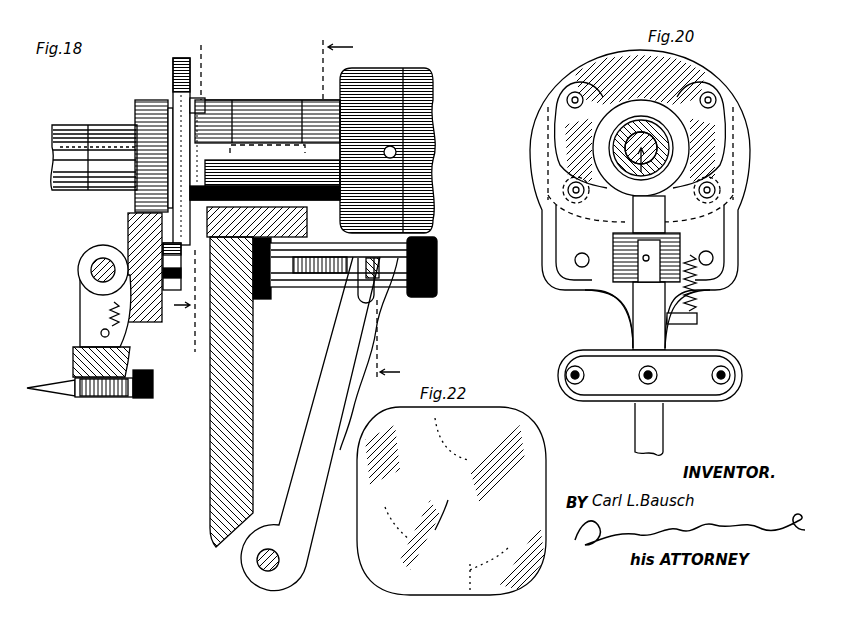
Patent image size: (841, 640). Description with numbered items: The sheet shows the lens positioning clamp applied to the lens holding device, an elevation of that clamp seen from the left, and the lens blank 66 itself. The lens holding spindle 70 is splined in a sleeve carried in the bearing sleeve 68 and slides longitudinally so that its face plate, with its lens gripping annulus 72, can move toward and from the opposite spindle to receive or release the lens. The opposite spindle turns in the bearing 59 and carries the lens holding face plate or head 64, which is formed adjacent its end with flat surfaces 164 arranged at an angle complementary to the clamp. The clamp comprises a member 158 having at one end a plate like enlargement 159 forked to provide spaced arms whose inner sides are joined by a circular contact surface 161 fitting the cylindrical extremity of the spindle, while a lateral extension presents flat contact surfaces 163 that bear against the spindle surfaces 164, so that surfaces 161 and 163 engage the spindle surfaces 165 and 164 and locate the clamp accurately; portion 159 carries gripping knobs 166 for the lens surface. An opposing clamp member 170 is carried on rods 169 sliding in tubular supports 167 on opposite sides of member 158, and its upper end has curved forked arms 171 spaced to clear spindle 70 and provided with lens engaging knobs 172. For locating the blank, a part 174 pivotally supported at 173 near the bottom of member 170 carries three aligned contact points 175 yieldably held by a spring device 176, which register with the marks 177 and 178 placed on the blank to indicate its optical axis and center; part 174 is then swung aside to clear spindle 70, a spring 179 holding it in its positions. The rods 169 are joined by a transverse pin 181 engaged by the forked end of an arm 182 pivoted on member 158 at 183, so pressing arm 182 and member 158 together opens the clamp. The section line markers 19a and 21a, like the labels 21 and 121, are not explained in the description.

In FIG. 18, the shaft axis line / ring 21 is at (113, 126).
In FIG. 20, the shaft axis line / ring 21 is at (667, 122).
In FIG. 18, the bearing 59 is at (387, 136).
In FIG. 18, the lens holding face plate or head 64 is at (280, 100).
In FIG. 20, the lens 66 is at (625, 56).
In FIG. 22, the bearing sleeve 68 is at (383, 560).
In FIG. 18, the lens holding spindle 70 is at (63, 193).
In FIG. 20, the lens holding spindle 70 is at (646, 124).
In FIG. 18, the lens gripping annulus 72 is at (111, 193).
In FIG. 18, the flange plate 121 is at (157, 100).
In FIG. 20, the flange plate 121 is at (745, 130).
In FIG. 18, the clamp member 158 is at (210, 425).
In FIG. 20, the clamp member 158 is at (640, 418).
In FIG. 20, the plate like enlargement 159 is at (537, 272).
In FIG. 18, the circular contact surface 161 is at (257, 222).
In FIG. 18, the flat contact surfaces 163 is at (292, 140).
In FIG. 18, the flat surfaces 164 is at (341, 159).
In FIG. 18, the spindle surfaces 165 is at (265, 135).
In FIG. 18, the gripping knobs 166 is at (306, 240).
In FIG. 18, the tubular supports 167 is at (290, 287).
In FIG. 18, the rod 169 is at (163, 252).
In FIG. 20, the rod 169 is at (578, 266).
In FIG. 18, the opposing clamp member 170 is at (122, 336).
In FIG. 20, the opposing clamp member 170 is at (566, 236).
In FIG. 20, the forked arms 171 is at (533, 145).
In FIG. 20, the lens engaging knobs 172 is at (717, 103).
In FIG. 18, the pivot 173 is at (97, 268).
In FIG. 20, the pivot 173 is at (610, 282).
In FIG. 18, the part 174 is at (87, 323).
In FIG. 20, the part 174 is at (612, 355).
In FIG. 18, the contact points 175 is at (40, 397).
In FIG. 20, the contact points 175 is at (584, 376).
In FIG. 18, the spring device 176 is at (105, 398).
In FIG. 22, the marks 177 is at (377, 503).
In FIG. 22, the mark 178 is at (447, 523).
In FIG. 18, the spring 179 is at (110, 307).
In FIG. 20, the spring 179 is at (696, 298).
In FIG. 18, the transverse pin 181 is at (410, 295).
In FIG. 18, the arm 182 is at (322, 372).
In FIG. 18, the pivot 183 is at (256, 561).
In FIG. 18, the section line 19a is at (351, 210).
In FIG. 18, the section line 21a is at (192, 205).